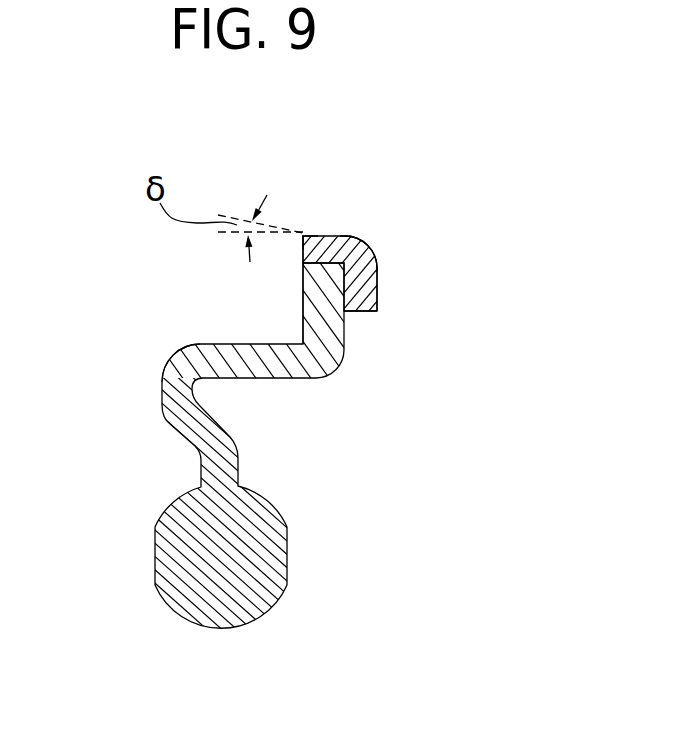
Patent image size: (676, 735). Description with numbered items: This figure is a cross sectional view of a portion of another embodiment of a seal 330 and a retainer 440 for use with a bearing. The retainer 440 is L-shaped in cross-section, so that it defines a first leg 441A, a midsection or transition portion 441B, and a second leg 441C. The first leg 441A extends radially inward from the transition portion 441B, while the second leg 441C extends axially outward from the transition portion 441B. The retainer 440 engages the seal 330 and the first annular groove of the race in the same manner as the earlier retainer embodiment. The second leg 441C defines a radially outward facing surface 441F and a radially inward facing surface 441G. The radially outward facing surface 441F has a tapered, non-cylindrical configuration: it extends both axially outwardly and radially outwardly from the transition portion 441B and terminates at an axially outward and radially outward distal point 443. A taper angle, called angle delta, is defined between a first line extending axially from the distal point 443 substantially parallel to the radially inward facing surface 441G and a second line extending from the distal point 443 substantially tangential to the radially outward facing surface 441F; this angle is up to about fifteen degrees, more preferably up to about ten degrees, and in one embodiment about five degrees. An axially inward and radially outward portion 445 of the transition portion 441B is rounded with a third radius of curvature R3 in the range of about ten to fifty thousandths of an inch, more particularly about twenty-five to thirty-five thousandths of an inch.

The seal 330 is at (170, 387).
The retainer 440 is at (357, 283).
The first leg 441A is at (375, 302).
The transition portion 441B is at (358, 259).
The second leg 441C is at (303, 248).
The radially outward facing surface 441F is at (323, 237).
The radially inward facing surface 441G is at (303, 298).
The distal point 443 is at (302, 237).
The axially inward and radially outward portion 445 is at (356, 238).
The third radius of curvature R3 is at (384, 230).